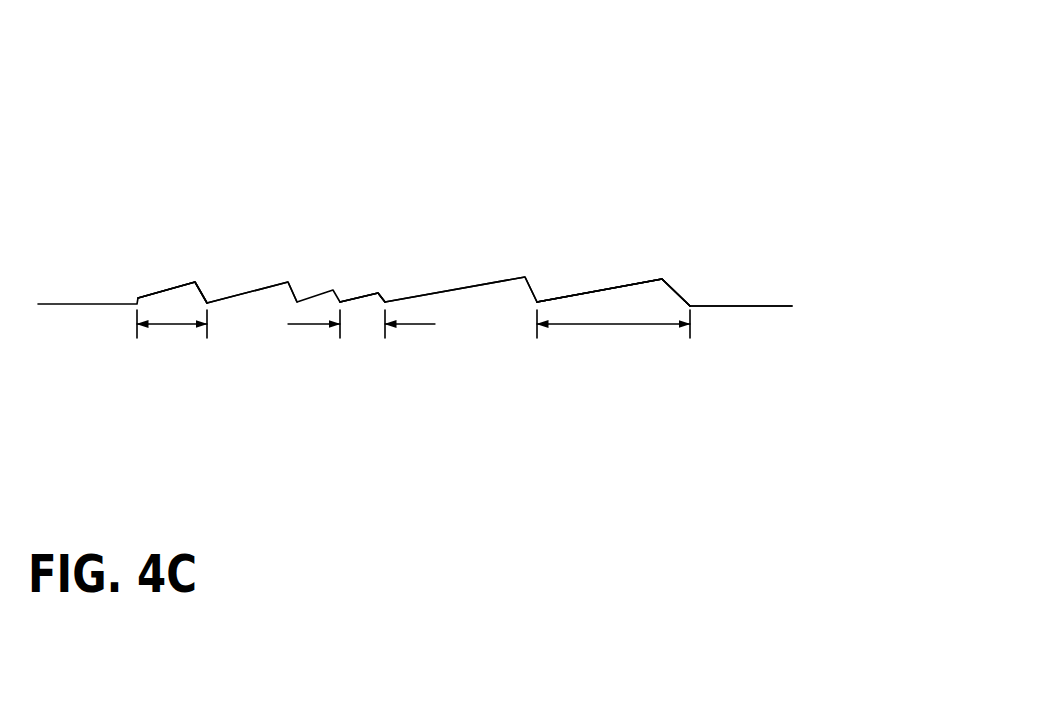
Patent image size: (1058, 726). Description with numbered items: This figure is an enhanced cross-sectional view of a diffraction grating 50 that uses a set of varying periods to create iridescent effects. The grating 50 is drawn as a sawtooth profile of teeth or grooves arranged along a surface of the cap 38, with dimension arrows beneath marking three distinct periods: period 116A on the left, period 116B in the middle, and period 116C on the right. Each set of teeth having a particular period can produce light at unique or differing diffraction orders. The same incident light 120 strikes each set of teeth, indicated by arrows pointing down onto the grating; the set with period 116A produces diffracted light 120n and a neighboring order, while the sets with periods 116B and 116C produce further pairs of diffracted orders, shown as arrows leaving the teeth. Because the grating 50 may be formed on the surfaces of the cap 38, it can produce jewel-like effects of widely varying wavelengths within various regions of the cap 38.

The diffraction grating 50 is at (675, 133).
The cap 38 is at (729, 183).
The incident light 120 is at (147, 292).
The diffracted light 120n is at (155, 285).
The period 116A is at (170, 324).
The period 116B is at (310, 324).
The period 116C is at (597, 324).